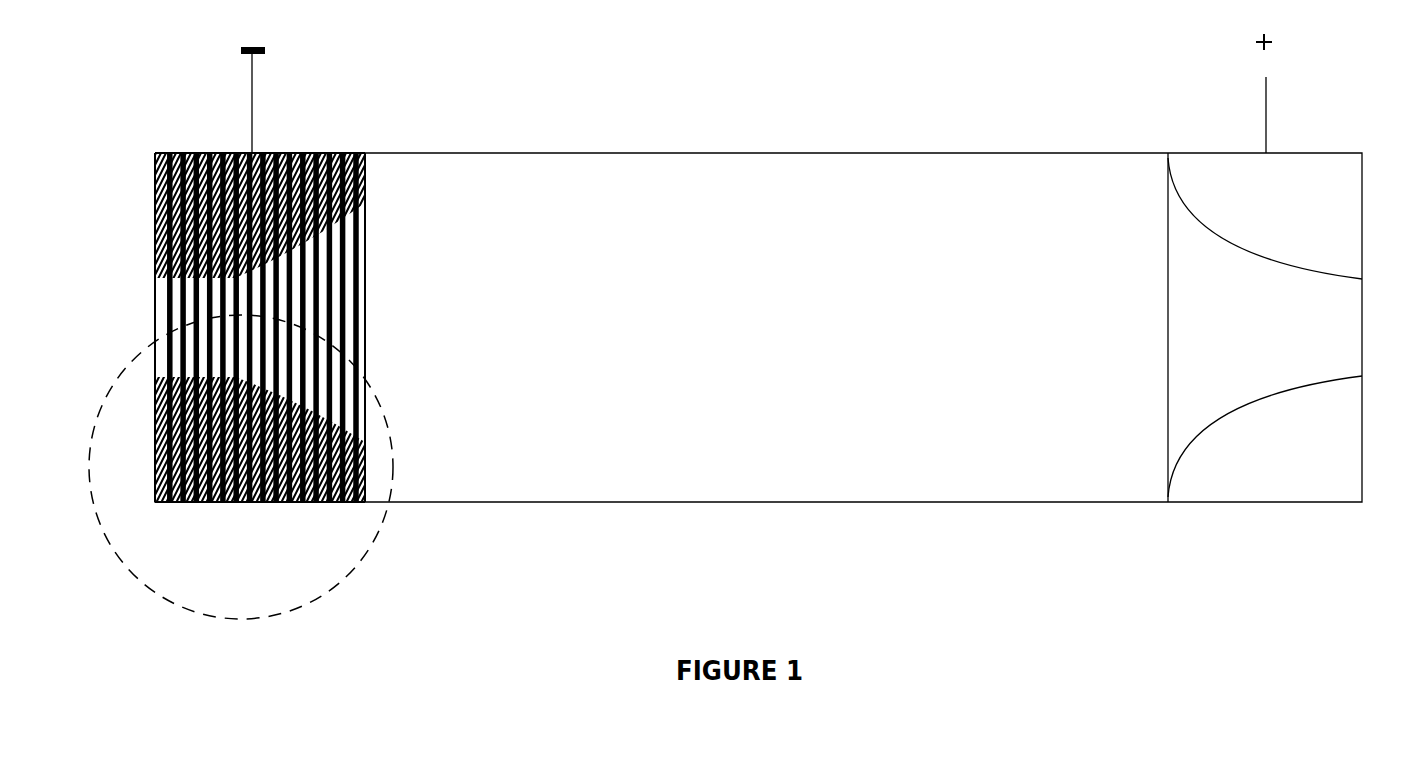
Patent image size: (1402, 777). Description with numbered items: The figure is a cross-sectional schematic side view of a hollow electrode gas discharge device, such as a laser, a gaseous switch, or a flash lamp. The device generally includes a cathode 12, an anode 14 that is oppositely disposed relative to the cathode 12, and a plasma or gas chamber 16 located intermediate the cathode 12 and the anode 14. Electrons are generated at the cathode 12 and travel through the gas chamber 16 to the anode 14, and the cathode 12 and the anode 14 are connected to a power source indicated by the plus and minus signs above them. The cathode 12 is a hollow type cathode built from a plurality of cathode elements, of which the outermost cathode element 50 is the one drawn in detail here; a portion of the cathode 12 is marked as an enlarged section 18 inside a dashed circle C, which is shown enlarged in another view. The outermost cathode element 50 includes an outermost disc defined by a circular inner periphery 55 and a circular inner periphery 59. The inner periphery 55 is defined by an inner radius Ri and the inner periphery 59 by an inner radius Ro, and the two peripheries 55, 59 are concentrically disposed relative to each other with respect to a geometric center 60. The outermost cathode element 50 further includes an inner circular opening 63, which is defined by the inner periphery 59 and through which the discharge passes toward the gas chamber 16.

The cathode 12 is at (229, 334).
The anode 14 is at (1308, 132).
The plasma or gas chamber 16 is at (732, 173).
The enlarged section 18 is at (303, 507).
The outermost cathode element 50 is at (152, 193).
The inner periphery 55 is at (157, 150).
The inner periphery 59 is at (152, 278).
The geometric center 60 is at (152, 358).
The inner circular opening 63 is at (153, 330).
The dashed circle C is at (207, 612).